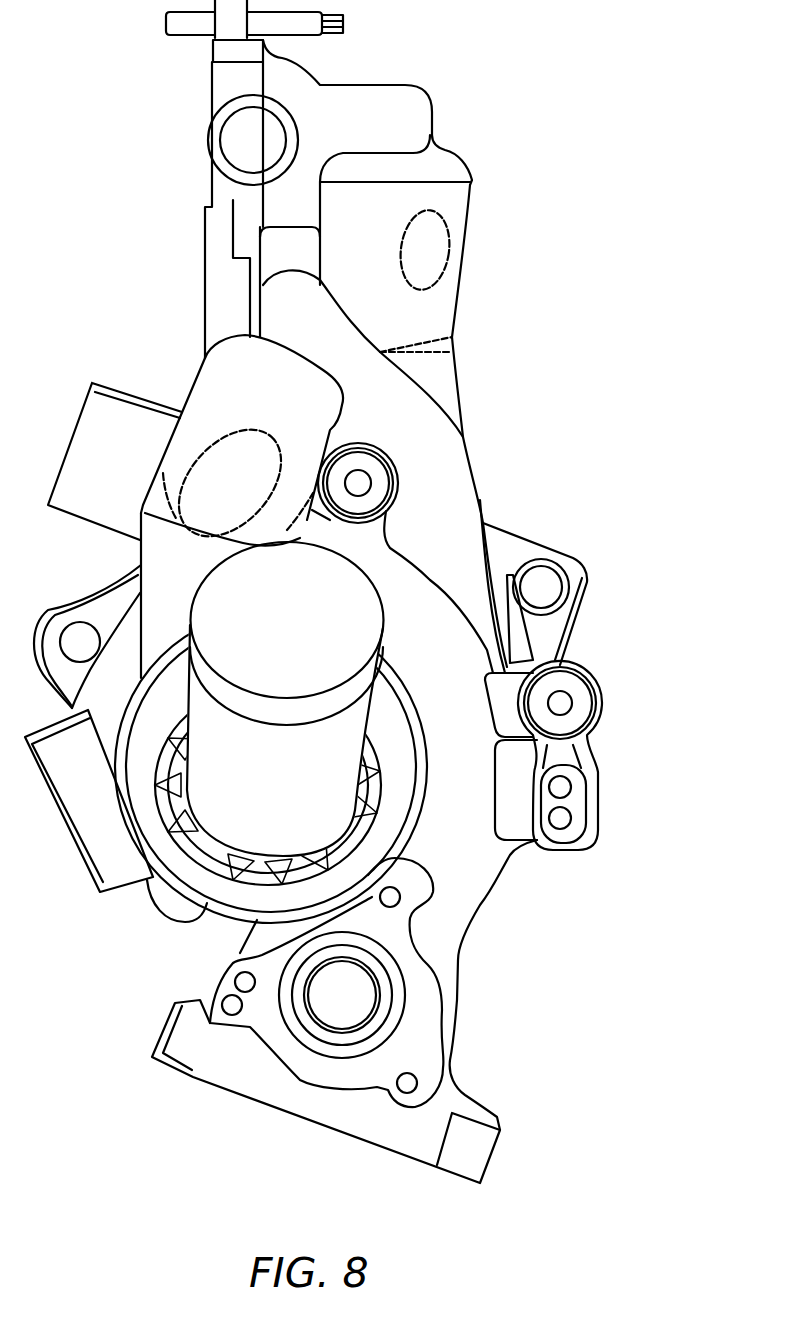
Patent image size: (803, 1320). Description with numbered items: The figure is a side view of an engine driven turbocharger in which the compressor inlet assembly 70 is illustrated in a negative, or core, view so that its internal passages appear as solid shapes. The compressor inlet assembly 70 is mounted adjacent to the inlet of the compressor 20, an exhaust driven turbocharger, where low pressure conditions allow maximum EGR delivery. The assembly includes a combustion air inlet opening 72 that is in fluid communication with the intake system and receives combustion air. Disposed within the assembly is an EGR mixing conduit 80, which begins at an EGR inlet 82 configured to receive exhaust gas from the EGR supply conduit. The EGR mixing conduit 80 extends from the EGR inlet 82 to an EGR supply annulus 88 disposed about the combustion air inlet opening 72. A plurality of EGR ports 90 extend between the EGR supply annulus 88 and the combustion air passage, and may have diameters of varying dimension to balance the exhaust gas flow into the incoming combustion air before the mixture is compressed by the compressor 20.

The compressor 20 is at (486, 898).
The compressor inlet assembly 70 is at (597, 663).
The combustion air inlet opening 72 is at (237, 610).
The EGR mixing conduit 80 is at (387, 603).
The EGR inlet 82 is at (191, 384).
The EGR supply annulus 88 is at (235, 902).
The EGR ports 90 is at (205, 835).